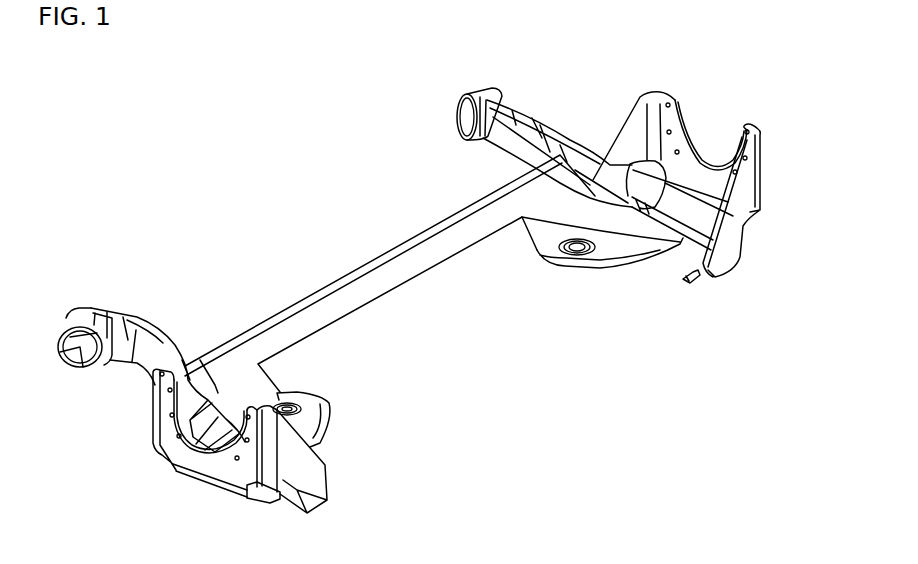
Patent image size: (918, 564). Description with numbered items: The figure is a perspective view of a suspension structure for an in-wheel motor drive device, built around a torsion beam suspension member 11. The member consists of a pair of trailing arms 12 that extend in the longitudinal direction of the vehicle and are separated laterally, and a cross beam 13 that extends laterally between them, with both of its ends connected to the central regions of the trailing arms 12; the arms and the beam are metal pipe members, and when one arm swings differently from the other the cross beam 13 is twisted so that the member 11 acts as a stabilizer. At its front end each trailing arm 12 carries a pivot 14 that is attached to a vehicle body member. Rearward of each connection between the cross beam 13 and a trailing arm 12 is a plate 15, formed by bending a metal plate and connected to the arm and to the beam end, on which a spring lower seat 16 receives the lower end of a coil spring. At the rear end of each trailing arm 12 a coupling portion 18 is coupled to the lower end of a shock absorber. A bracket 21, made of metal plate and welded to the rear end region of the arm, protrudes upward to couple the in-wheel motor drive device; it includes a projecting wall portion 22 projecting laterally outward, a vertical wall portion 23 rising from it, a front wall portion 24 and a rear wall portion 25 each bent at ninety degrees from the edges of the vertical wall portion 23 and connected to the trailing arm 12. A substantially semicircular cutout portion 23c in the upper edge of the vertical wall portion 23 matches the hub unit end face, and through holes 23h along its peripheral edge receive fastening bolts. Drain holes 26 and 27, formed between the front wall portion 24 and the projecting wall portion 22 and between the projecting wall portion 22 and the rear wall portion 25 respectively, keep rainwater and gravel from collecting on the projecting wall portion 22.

The torsion beam suspension member 11 is at (281, 198).
The trailing arm 12 is at (523, 121).
The cross beam 13 is at (430, 252).
The pivot 14 is at (483, 92).
The plate 15 is at (614, 264).
The spring lower seat 16 is at (290, 397).
The coupling portion 18 is at (691, 280).
The bracket 21 is at (759, 215).
The projecting wall portion 22 is at (697, 215).
The vertical wall portion 23 is at (746, 126).
The cutout portion 23c is at (676, 122).
The through hole 23h is at (685, 150).
The front wall portion 24 is at (627, 113).
The rear wall portion 25 is at (720, 252).
The drain hole 26 is at (647, 180).
The drain hole 27 is at (276, 504).